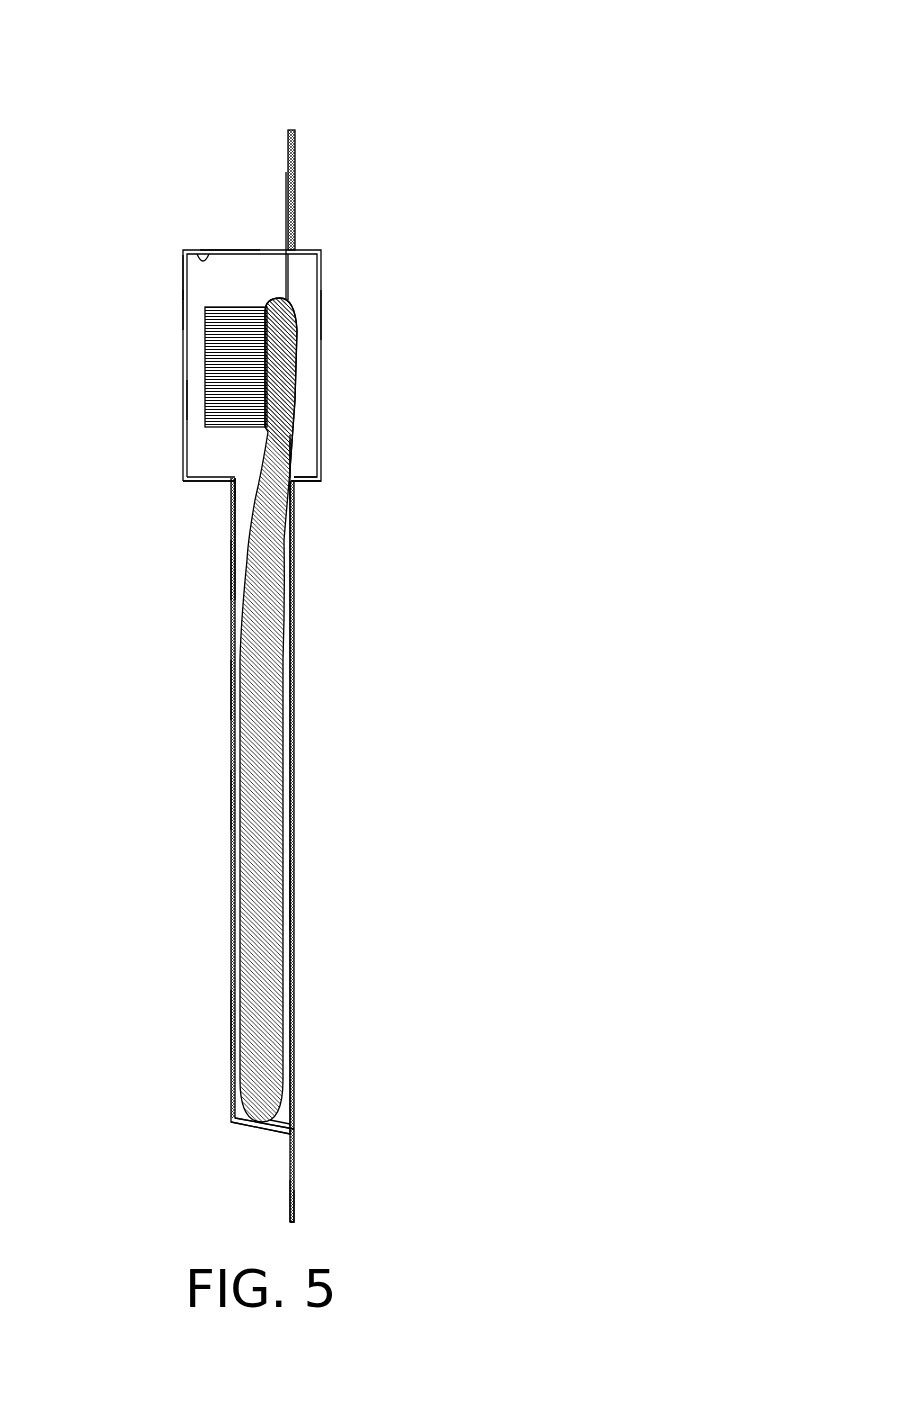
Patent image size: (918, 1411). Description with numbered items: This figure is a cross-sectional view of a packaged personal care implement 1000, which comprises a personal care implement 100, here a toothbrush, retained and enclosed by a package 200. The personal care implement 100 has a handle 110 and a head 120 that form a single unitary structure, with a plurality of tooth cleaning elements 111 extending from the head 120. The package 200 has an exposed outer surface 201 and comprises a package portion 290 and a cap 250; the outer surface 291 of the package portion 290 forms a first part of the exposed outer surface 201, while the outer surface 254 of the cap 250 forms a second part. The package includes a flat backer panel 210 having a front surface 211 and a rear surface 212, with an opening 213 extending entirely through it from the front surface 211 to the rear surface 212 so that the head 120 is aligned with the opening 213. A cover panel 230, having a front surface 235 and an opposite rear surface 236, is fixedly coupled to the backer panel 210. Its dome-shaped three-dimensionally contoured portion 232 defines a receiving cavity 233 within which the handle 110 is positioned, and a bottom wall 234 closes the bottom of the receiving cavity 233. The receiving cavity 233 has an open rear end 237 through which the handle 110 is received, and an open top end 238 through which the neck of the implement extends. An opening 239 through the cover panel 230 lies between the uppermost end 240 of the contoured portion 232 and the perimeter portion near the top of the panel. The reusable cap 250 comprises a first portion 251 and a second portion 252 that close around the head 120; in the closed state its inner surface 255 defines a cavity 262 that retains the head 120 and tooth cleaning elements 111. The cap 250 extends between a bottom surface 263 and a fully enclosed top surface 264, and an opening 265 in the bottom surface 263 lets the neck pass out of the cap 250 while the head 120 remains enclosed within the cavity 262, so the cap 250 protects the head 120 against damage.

The packaged personal care implement 1000 is at (545, 129).
The personal care implement 100 is at (295, 597).
The handle 110 is at (262, 858).
The tooth cleaning elements 111 is at (237, 360).
The head 120 is at (282, 390).
The package 200 is at (303, 186).
The exposed outer surface 201 is at (230, 1022).
The backer panel 210 is at (295, 1165).
The front surface 211 is at (296, 140).
The rear surface 212 is at (288, 148).
The opening 213 is at (292, 275).
The cover panel 230 is at (230, 612).
The three-dimensionally contoured portion 232 is at (230, 688).
The receiving cavity 233 is at (233, 567).
The bottom wall 234 is at (258, 1126).
The front surface 235 is at (288, 1196).
The rear surface 236 is at (294, 1202).
The open rear end 237 is at (280, 1115).
The open top end 238 is at (238, 487).
The opening 239 is at (292, 458).
The uppermost end 240 is at (235, 480).
The cap 250 is at (321, 438).
The first portion 251 is at (183, 262).
The second portion 252 is at (321, 312).
The outer surface 254 is at (183, 300).
The inner surface 255 is at (203, 256).
The cavity 262 is at (202, 398).
The bottom surface 263 is at (308, 482).
The top surface 264 is at (224, 248).
The opening 265 is at (248, 506).
The package portion 290 is at (295, 893).
The outer surface 291 is at (230, 800).